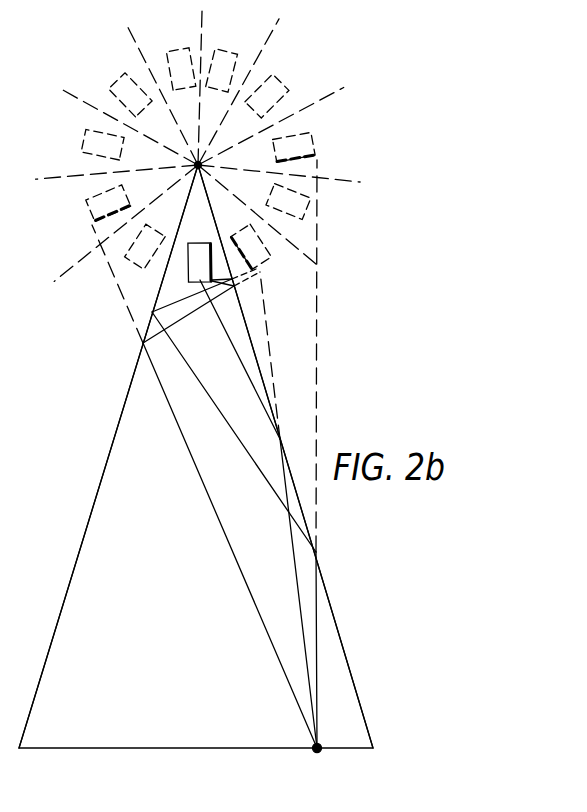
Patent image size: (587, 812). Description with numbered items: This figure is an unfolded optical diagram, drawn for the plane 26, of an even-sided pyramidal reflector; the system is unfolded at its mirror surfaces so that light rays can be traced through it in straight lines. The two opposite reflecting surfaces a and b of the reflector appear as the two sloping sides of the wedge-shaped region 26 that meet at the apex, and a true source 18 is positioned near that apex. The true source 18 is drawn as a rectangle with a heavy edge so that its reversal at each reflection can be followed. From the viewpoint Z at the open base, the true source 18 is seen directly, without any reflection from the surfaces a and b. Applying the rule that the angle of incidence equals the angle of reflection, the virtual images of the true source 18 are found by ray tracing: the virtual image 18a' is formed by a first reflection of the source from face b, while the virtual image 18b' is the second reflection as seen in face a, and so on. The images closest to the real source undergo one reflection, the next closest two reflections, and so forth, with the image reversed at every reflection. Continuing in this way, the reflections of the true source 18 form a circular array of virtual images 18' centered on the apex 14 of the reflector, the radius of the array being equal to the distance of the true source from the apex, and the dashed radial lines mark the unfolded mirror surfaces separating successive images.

The apex / center of mirror system 14 is at (200, 163).
The true source 18 is at (198, 248).
The virtual images 18' is at (318, 134).
The virtual image 18a' is at (270, 254).
The virtual image 18b' is at (76, 203).
The plane 26 is at (166, 579).
The surface a is at (107, 465).
The surface b is at (284, 463).
The viewpoint Z is at (320, 752).